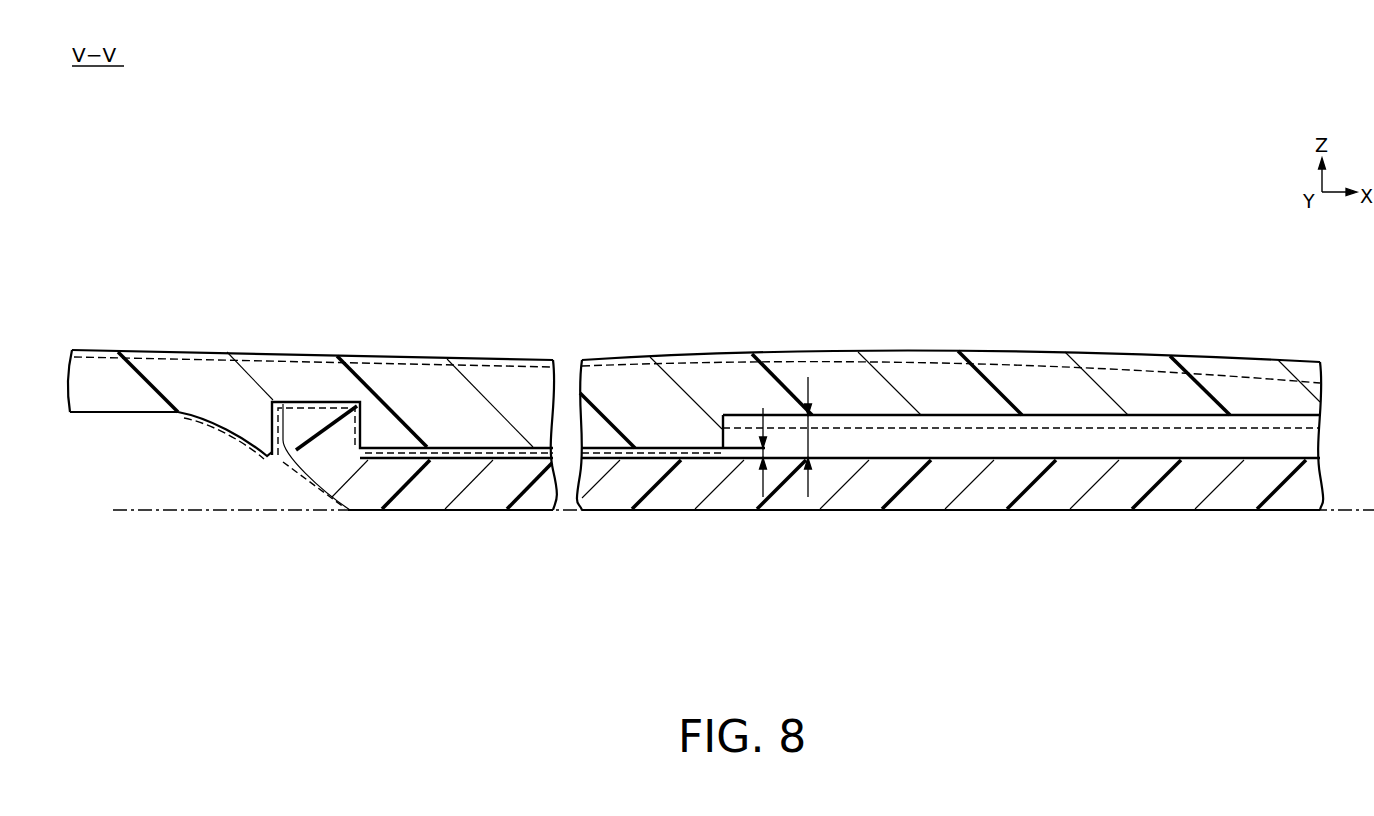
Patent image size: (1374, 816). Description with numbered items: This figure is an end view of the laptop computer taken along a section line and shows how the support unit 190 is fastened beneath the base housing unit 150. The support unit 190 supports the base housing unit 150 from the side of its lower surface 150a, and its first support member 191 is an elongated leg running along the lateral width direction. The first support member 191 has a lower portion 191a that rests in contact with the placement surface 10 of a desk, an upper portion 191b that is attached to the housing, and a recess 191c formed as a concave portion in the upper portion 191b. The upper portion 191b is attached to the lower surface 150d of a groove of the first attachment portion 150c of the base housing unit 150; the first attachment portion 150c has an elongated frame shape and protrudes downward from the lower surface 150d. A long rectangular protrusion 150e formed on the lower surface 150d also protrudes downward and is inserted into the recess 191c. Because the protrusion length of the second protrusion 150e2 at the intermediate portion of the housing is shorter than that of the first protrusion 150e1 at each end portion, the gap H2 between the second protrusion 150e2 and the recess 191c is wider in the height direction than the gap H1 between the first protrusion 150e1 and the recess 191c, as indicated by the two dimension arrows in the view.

The placement surface 10 is at (1352, 508).
The base housing unit 150 is at (150, 490).
The lower surface 150a is at (121, 413).
The first attachment portion 150c is at (240, 417).
The lower surface of groove 150d is at (343, 393).
The protrusion 150e is at (815, 410).
The first protrusion 150e1 is at (612, 452).
The second protrusion 150e2 is at (1003, 417).
The support unit 190 is at (341, 562).
The first support member 191 is at (357, 492).
The lower portion 191a is at (527, 510).
The upper portion 191b is at (348, 391).
The recess 191c is at (503, 447).
The gap H1 is at (748, 452).
The gap H2 is at (793, 437).